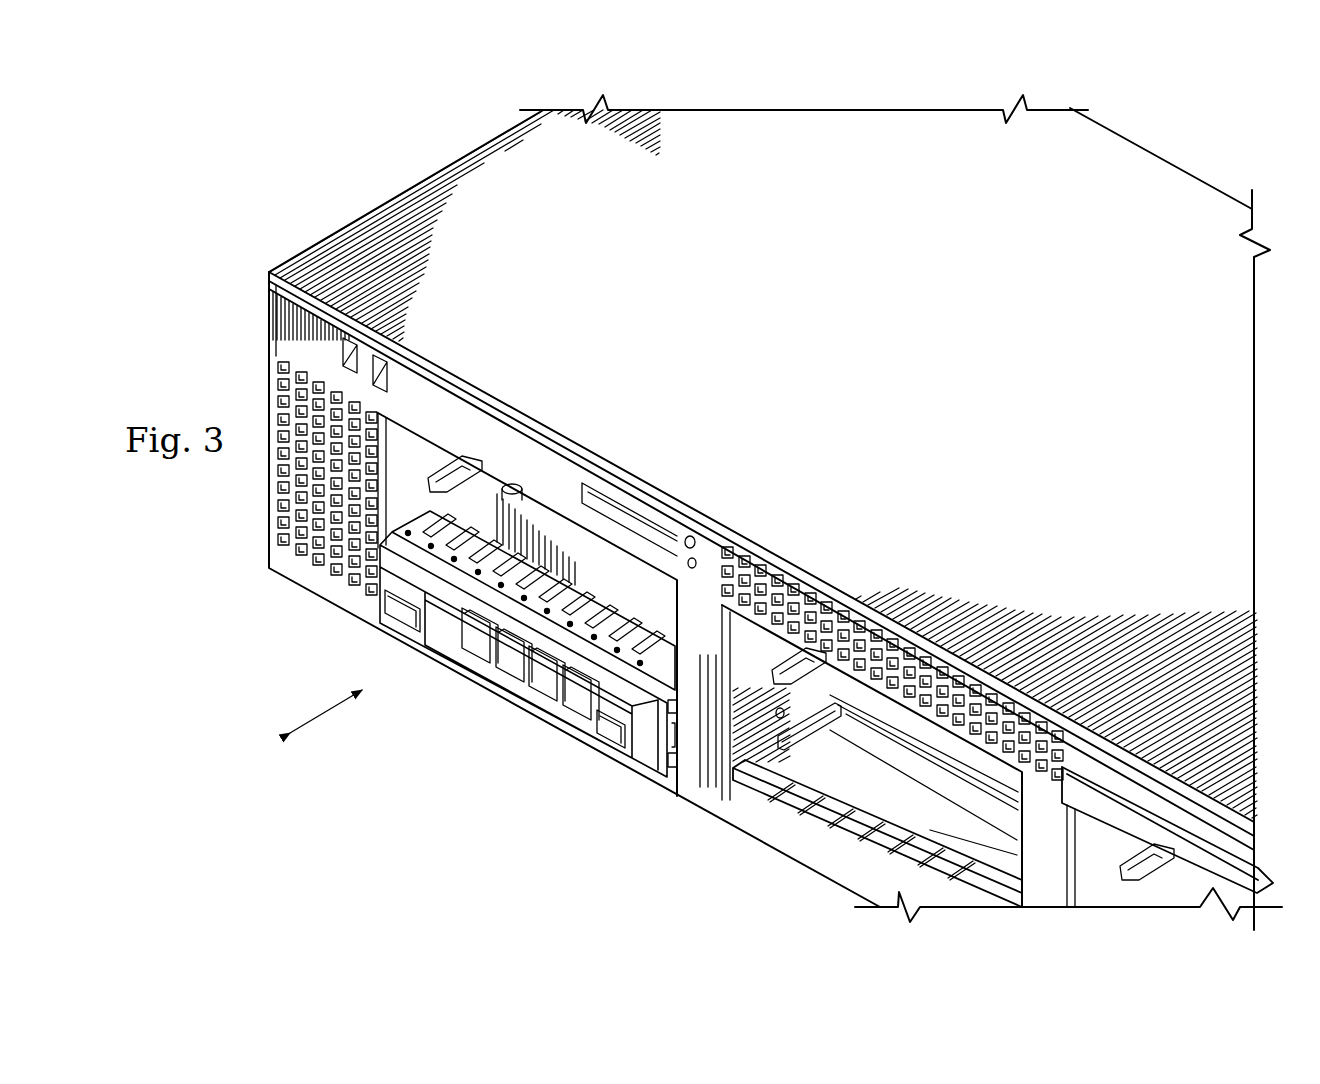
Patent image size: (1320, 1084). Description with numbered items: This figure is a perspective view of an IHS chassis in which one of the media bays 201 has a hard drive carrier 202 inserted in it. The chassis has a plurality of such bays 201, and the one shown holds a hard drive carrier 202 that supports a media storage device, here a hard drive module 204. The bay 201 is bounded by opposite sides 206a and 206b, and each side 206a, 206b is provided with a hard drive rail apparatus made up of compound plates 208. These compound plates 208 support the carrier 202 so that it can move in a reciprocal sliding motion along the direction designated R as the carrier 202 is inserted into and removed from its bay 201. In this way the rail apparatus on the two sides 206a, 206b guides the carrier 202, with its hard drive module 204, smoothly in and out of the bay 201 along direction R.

The bay 201 is at (600, 574).
The hard drive carrier 202 is at (506, 696).
The hard drive module 204 is at (537, 533).
The side 206a is at (412, 468).
The side 206b is at (677, 608).
The compound plates 208 is at (428, 460).
The direction R is at (326, 708).